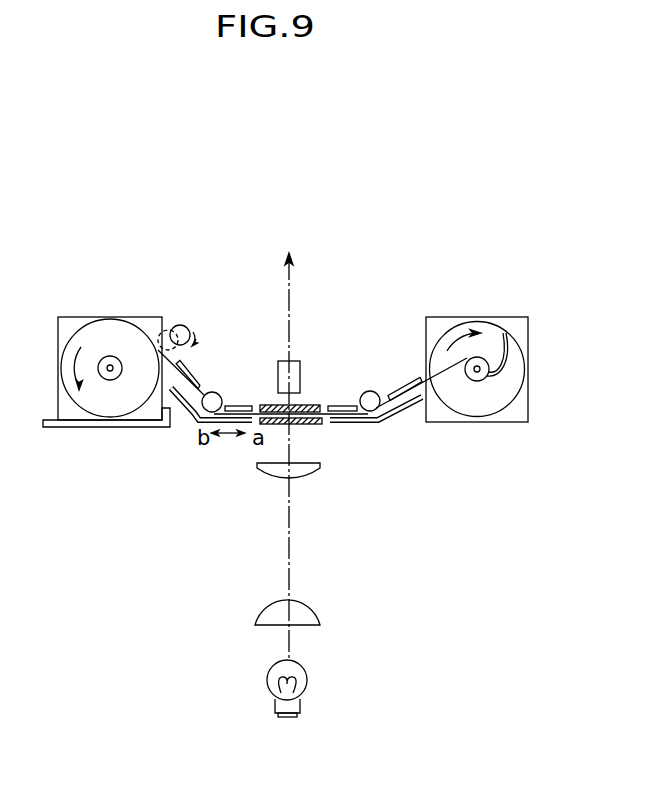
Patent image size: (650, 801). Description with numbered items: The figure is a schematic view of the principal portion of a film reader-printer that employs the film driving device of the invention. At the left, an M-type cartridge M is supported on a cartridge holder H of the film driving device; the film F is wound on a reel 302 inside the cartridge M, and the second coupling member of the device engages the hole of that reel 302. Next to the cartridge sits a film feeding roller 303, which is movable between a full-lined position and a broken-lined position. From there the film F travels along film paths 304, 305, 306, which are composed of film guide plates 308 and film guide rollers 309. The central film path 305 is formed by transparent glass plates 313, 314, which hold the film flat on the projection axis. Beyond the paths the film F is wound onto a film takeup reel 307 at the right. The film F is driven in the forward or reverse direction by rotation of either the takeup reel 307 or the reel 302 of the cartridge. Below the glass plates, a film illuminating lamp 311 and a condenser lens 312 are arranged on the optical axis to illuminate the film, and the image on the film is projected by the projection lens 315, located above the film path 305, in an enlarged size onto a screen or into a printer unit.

The M-type cartridge M is at (88, 316).
The reel 302 is at (120, 336).
The film feeding roller 303 is at (160, 330).
The film path 304 is at (191, 405).
The film path 305 is at (317, 425).
The film path 306 is at (403, 405).
The film takeup reel 307 is at (490, 333).
The film guide plates 308 is at (196, 372).
The film guide rollers 309 is at (216, 402).
The film illuminating lamp 311 is at (268, 672).
The condenser lens 312 is at (272, 473).
The transparent glass plate 313 is at (305, 405).
The transparent glass plate 314 is at (307, 426).
The projection lens 315 is at (300, 361).
The film F is at (194, 395).
The cartridge holder H is at (53, 428).